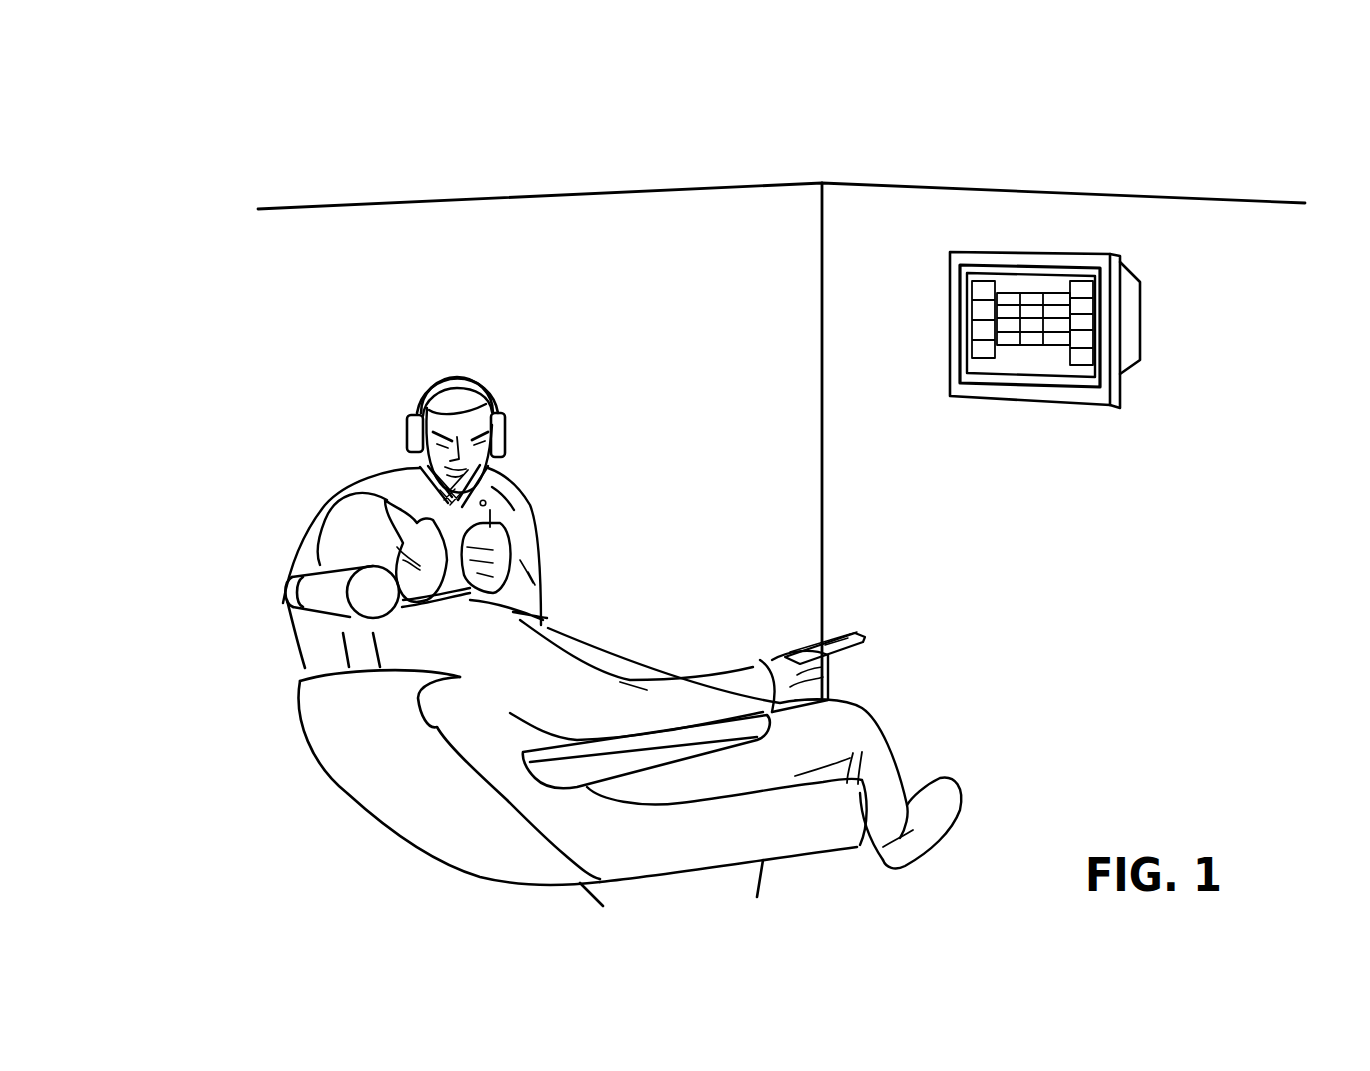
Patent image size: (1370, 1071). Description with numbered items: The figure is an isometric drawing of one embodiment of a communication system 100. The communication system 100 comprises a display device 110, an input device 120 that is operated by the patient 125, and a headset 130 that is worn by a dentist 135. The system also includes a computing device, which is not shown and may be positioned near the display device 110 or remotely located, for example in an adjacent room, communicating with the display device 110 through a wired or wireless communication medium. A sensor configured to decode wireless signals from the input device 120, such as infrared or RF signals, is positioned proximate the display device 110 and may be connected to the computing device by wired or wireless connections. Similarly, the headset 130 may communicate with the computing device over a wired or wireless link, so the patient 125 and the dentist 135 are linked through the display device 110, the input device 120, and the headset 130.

The communication system 100 is at (1000, 128).
The display device 110 is at (1125, 380).
The input device 120 is at (866, 641).
The patient 125 is at (521, 665).
The headset 130 is at (506, 404).
The dentist 135 is at (370, 468).